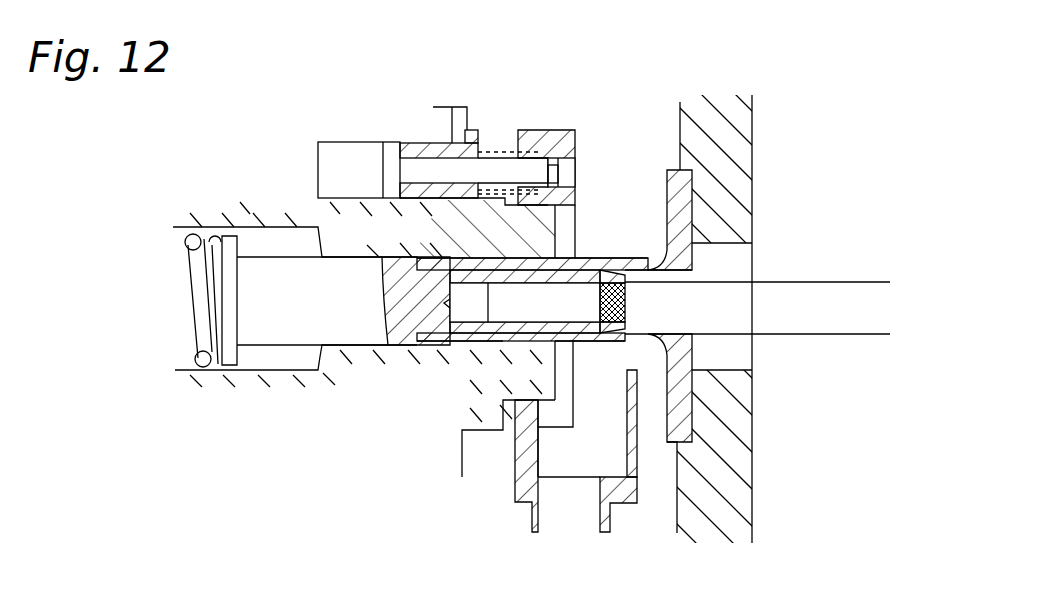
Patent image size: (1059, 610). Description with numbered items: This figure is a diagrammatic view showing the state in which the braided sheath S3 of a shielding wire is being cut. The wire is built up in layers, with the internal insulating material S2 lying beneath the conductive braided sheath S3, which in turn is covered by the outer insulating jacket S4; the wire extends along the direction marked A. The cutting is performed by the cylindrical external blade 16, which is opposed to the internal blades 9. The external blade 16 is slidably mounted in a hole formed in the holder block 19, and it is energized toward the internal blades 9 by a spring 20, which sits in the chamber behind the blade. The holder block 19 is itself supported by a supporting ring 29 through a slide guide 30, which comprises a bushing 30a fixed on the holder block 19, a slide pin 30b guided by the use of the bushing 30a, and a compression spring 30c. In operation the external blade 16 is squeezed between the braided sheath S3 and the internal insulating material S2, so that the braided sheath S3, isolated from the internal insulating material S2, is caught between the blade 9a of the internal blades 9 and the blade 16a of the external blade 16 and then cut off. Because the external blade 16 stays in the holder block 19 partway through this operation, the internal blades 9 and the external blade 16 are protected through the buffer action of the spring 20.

The holder block 19 is at (248, 215).
The spring 20 is at (200, 373).
The internal insulating material S2 is at (447, 365).
The external blade 16 is at (553, 338).
The blade of the external blade 16a is at (594, 270).
The blade of the internal blades 9a is at (600, 270).
The internal blades 9 is at (580, 425).
The valve rod A is at (807, 276).
The braided sheath S3 is at (627, 305).
The outer insulating jacket S4 is at (847, 315).
The supporting ring 29 is at (547, 137).
The slide guide 30 is at (551, 64).
The bushing 30a is at (450, 152).
The slide pin 30b is at (427, 172).
The compression spring 30c is at (493, 150).